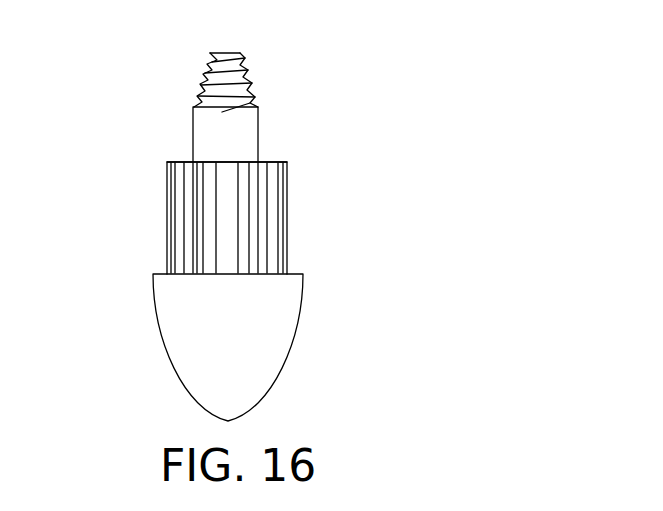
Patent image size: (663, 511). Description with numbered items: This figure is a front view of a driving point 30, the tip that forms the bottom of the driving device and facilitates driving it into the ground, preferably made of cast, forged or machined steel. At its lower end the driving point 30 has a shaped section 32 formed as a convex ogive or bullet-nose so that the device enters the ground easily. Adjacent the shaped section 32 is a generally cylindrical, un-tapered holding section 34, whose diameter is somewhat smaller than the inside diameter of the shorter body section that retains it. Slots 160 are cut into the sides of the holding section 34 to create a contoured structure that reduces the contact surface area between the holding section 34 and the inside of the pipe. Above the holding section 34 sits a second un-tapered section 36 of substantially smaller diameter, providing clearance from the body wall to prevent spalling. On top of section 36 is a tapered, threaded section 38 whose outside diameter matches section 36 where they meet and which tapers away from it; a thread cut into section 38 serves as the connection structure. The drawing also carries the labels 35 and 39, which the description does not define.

The driving point 30 is at (230, 232).
The shaped section 32 is at (180, 380).
The holding section 34 is at (287, 188).
The housing top surface 35 is at (189, 161).
The second un-tapered section 36 is at (240, 132).
The tapered threaded section 38 is at (248, 77).
The thread tip 39 is at (242, 60).
The slots 160 is at (207, 238).